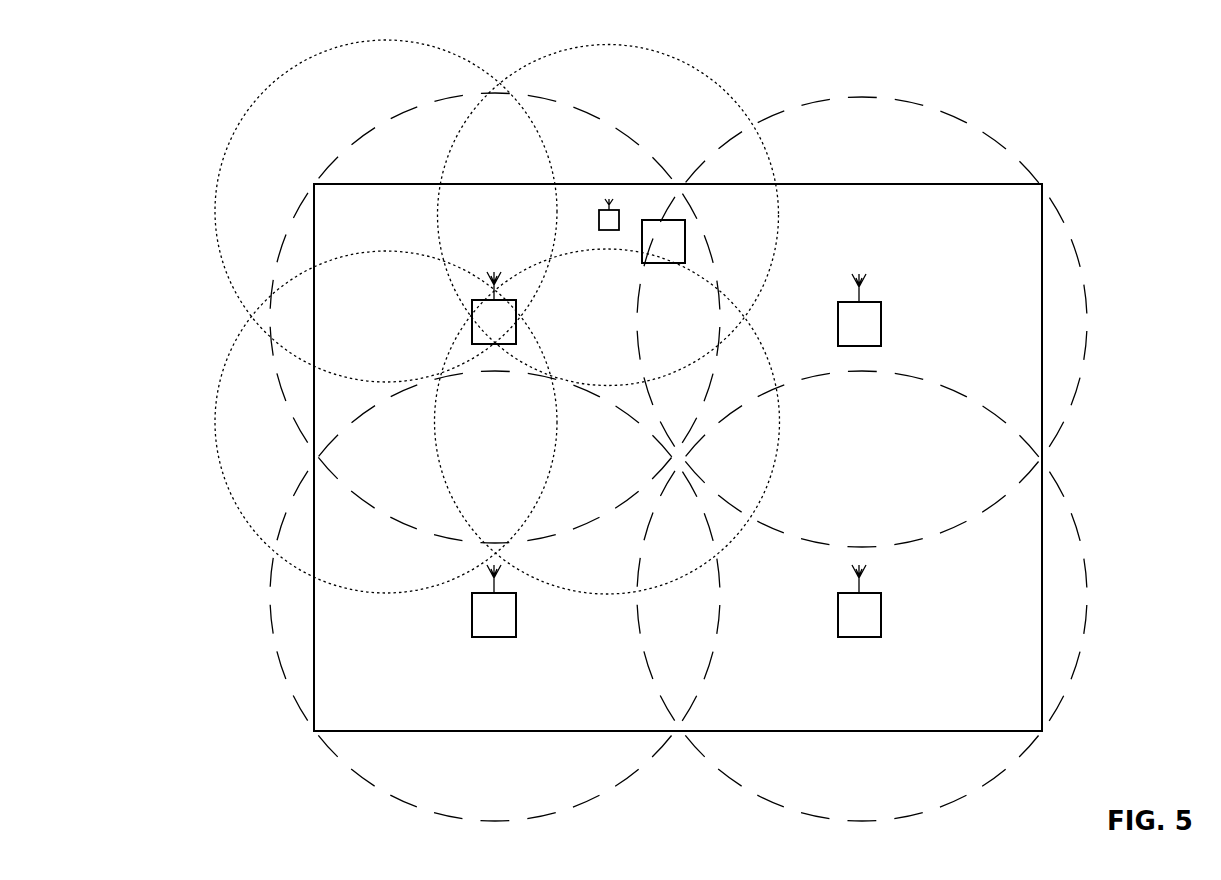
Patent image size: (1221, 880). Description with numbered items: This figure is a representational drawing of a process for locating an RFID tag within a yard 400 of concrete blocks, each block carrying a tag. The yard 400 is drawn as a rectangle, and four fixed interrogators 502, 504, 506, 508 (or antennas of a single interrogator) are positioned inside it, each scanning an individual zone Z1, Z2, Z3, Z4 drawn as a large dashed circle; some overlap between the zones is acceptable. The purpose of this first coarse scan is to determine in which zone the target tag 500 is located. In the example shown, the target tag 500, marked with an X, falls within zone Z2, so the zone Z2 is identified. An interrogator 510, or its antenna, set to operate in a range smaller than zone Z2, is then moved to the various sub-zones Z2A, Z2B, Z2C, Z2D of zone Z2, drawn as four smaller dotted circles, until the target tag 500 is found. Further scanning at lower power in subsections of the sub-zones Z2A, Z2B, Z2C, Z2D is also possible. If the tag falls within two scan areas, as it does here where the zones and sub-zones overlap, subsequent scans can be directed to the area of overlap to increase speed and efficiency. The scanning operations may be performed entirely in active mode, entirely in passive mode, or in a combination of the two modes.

The yard 400 is at (405, 183).
The target tag 500 is at (685, 238).
The fixed interrogator 502 is at (472, 617).
The fixed interrogator 504 is at (472, 319).
The fixed interrogator 506 is at (838, 310).
The fixed interrogator 508 is at (838, 605).
The interrogator 510 is at (599, 218).
The zone Z1 is at (271, 563).
The zone Z2 is at (272, 288).
The zone Z3 is at (862, 322).
The zone Z4 is at (862, 596).
The sub-zone Z2A is at (233, 340).
The sub-zone Z2B is at (245, 112).
The sub-zone Z2C is at (722, 88).
The sub-zone Z2D is at (855, 490).